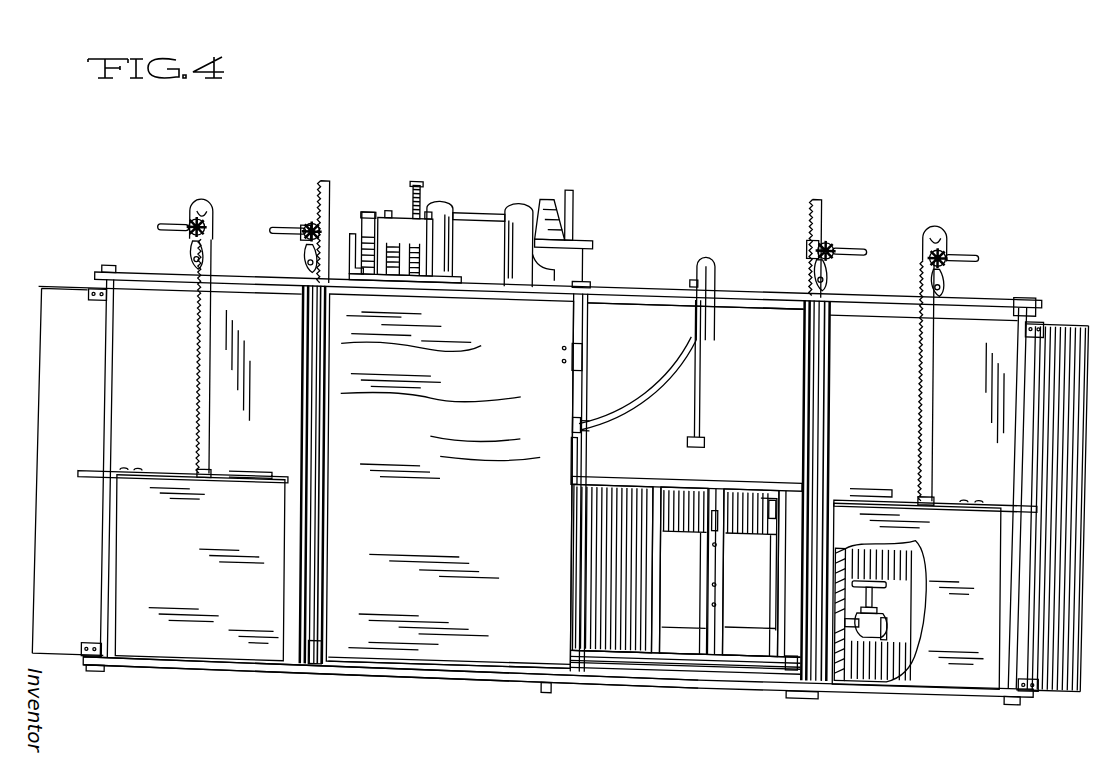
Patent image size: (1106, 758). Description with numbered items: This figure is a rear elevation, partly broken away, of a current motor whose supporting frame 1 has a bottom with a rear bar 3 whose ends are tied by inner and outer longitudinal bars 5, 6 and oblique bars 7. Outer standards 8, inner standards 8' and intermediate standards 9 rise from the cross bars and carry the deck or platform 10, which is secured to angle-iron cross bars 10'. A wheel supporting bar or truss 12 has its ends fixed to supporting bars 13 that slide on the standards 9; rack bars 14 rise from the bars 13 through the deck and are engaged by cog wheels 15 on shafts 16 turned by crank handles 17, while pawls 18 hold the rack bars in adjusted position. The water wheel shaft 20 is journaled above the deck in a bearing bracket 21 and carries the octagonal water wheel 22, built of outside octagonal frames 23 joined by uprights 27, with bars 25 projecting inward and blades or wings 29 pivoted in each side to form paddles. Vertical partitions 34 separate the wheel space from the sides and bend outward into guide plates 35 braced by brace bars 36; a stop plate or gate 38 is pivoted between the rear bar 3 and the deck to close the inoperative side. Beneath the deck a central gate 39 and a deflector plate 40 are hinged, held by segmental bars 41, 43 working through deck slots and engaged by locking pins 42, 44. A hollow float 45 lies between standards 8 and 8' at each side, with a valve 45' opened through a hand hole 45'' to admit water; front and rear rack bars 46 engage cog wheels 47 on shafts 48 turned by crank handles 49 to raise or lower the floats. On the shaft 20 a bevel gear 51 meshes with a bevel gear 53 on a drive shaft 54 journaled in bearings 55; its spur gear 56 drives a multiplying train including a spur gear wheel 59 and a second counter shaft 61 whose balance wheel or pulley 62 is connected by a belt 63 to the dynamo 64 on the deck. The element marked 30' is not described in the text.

The supporting frame 1 is at (449, 685).
The rear bar 3 is at (413, 676).
The inner longitudinal bar 5 is at (278, 680).
The outer longitudinal bar 6 is at (118, 679).
The oblique bar 7 is at (257, 674).
The outer standard 8 is at (559, 484).
The inner standard 8' is at (560, 482).
The intermediate standard 9 is at (315, 445).
The deck or platform 10 is at (568, 281).
The angle-iron cross bar 10' is at (527, 311).
The wheel supporting bar or truss 12 is at (593, 668).
The supporting bar 13 is at (323, 652).
The rack bar 14 is at (328, 353).
The cog wheel 15 is at (303, 231).
The shaft 16 is at (294, 246).
The crank handle 17 is at (272, 236).
The pawl 18 is at (299, 269).
The water wheel shaft 20 is at (587, 418).
The bearing bracket 21 is at (580, 273).
The water wheel 22 is at (599, 480).
The outside octagonal frame 23 is at (653, 483).
The bar 25 is at (752, 515).
The upright 27 is at (787, 494).
The blade or wing 29 is at (591, 572).
The lower rail 30' is at (685, 668).
The vertical partition 34 is at (305, 432).
The guide plate 35 is at (38, 403).
The brace bar 36 is at (90, 302).
The stop plate or gate 38 is at (405, 427).
The central longitudinal gate 39 is at (571, 458).
The deflector plate 40 is at (758, 316).
The segmental bar 41 is at (665, 380).
The pawl or locking pin 42 is at (723, 263).
The segmental bar 43 is at (699, 377).
The pawl or locking pin 44 is at (688, 279).
The hollow float 45 is at (558, 582).
The valve 45' is at (888, 610).
The hand hole 45'' is at (557, 477).
The rack bar 46 is at (210, 347).
The cog wheel 47 is at (197, 210).
The shaft 48 is at (186, 248).
The crank handle 49 is at (160, 236).
The bevel gear 51 is at (578, 236).
The bevel gear 53 is at (537, 200).
The drive shaft 54 is at (476, 212).
The bearing 55 is at (498, 272).
The spur gear 56 is at (419, 189).
The spur gear wheel 59 is at (386, 223).
The second counter shaft 61 is at (346, 258).
The balance wheel or pulley 62 is at (355, 226).
The belt 63 is at (362, 218).
The dynamo 64 is at (410, 287).